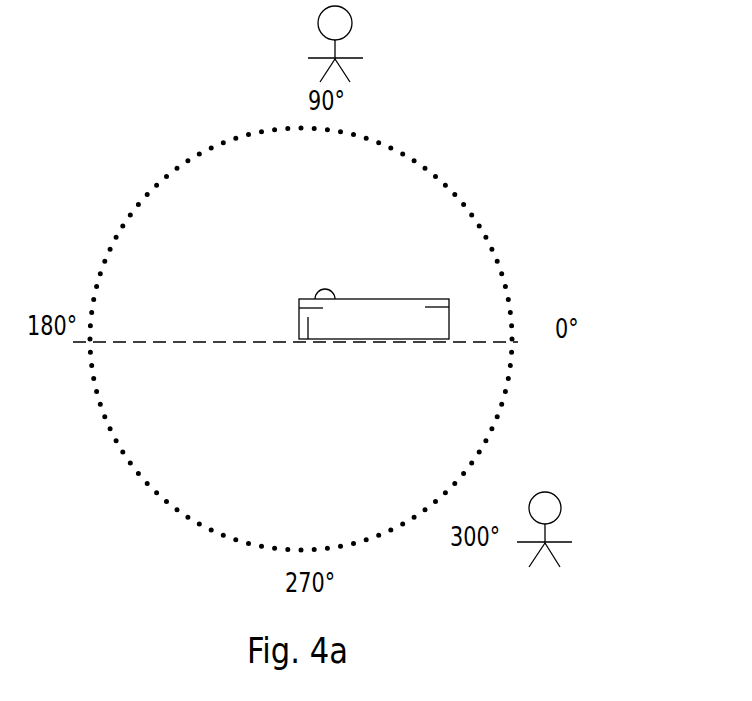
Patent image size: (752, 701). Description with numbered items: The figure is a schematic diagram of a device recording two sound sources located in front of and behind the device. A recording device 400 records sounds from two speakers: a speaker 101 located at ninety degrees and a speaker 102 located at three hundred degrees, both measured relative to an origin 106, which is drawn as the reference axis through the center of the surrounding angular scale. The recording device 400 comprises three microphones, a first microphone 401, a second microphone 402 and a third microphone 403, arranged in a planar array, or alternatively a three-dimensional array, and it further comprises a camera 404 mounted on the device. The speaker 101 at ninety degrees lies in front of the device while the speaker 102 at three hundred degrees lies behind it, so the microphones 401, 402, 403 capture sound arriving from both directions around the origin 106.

The speaker 101 is at (352, 22).
The speaker 102 is at (561, 506).
The origin 106 is at (217, 343).
The recording device 400 is at (397, 335).
The microphone 401 is at (299, 308).
The microphone 402 is at (449, 307).
The microphone 403 is at (308, 339).
The camera 404 is at (317, 289).